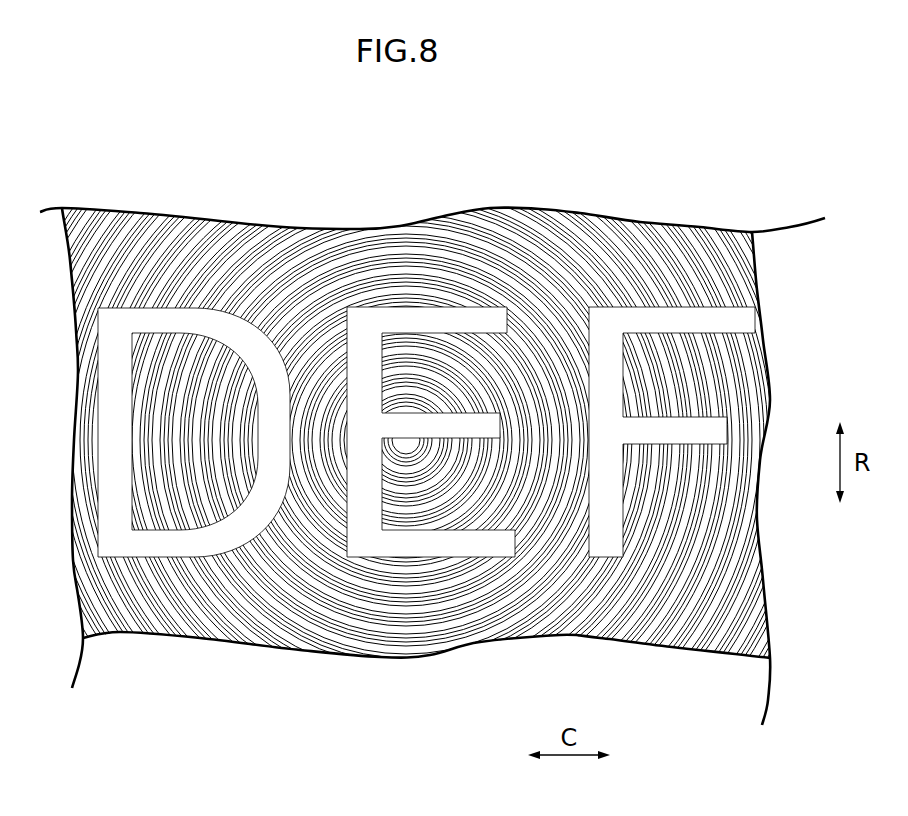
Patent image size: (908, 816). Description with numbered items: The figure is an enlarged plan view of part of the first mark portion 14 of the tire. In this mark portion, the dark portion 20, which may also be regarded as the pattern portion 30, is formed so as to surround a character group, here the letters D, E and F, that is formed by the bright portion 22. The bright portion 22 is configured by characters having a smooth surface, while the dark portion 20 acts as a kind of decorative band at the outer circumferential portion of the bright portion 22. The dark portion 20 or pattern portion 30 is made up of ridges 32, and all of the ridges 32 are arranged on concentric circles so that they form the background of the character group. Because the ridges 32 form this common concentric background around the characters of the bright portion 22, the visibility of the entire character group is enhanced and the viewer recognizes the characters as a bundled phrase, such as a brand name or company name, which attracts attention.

The first mark portion 14 is at (605, 199).
The dark portion 20 is at (220, 219).
The bright portion 22 is at (387, 317).
The pattern portion 30 is at (275, 272).
The ridges 32 is at (303, 590).